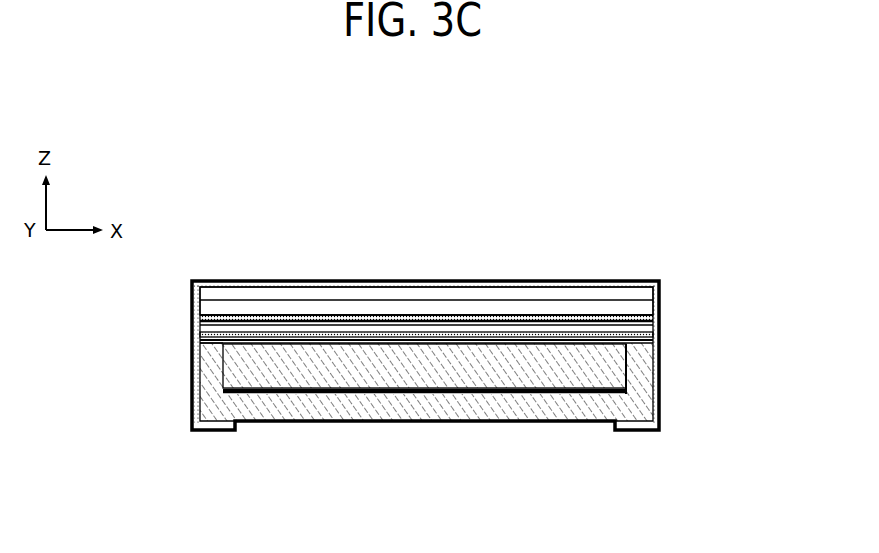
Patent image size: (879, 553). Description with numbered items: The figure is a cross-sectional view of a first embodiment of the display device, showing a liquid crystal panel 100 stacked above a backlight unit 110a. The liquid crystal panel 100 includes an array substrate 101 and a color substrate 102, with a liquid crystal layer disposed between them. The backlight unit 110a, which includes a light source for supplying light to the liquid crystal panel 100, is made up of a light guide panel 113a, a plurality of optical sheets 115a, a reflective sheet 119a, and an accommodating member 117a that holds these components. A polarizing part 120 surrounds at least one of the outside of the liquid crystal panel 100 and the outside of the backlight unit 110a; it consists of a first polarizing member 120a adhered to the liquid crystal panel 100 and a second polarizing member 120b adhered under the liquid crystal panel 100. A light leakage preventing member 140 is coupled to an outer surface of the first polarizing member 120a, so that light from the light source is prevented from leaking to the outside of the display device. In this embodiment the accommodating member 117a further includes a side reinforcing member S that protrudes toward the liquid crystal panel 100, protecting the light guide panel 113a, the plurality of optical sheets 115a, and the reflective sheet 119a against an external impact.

The liquid crystal panel 100 is at (357, 213).
The array substrate 101 is at (300, 307).
The color substrate 102 is at (344, 296).
The polarizing part 120 is at (359, 303).
The first polarizing member 120a is at (198, 288).
The second polarizing member 120b is at (198, 320).
The light leakage preventing member 140 is at (193, 398).
The side reinforcing member S is at (200, 353).
The backlight unit 110a is at (503, 368).
The plurality of optical sheets 115a is at (643, 340).
The light guide panel 113a is at (612, 365).
The reflective sheet 119a is at (643, 392).
The accommodating member 117a is at (638, 407).